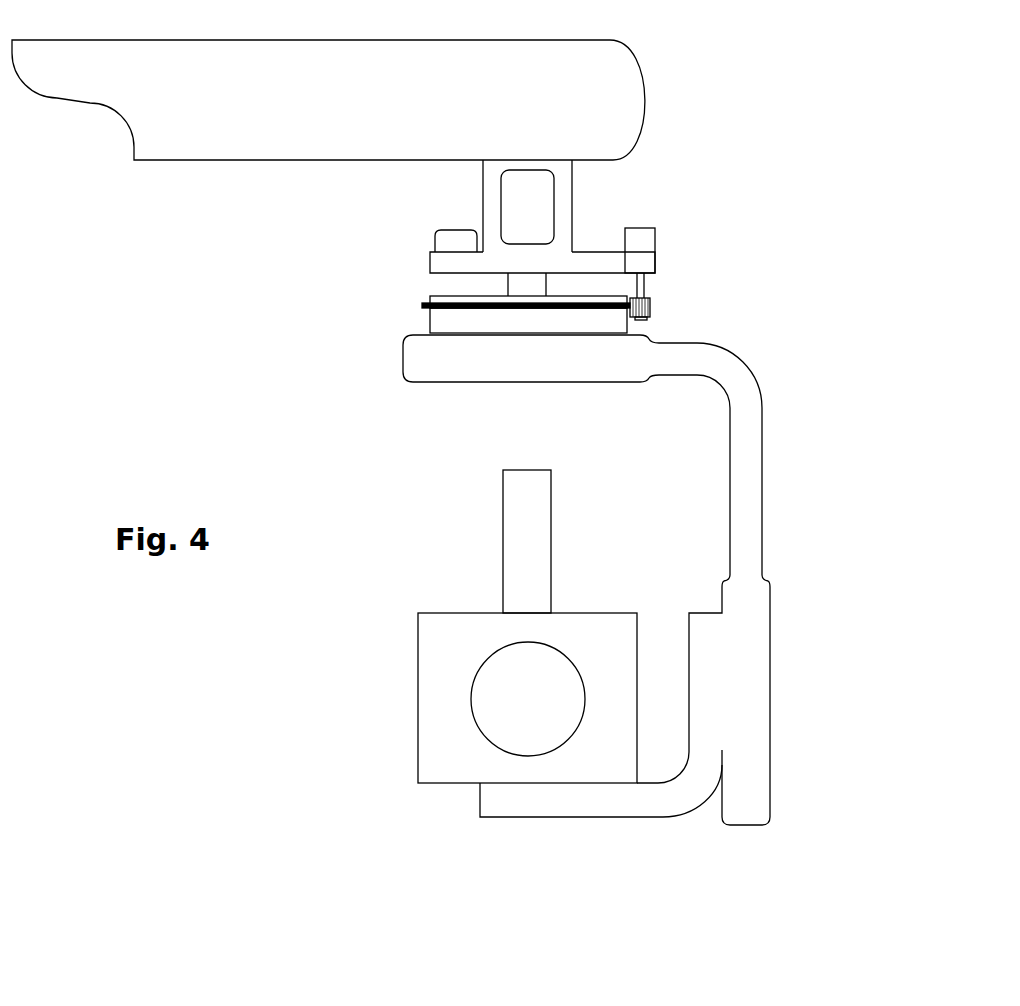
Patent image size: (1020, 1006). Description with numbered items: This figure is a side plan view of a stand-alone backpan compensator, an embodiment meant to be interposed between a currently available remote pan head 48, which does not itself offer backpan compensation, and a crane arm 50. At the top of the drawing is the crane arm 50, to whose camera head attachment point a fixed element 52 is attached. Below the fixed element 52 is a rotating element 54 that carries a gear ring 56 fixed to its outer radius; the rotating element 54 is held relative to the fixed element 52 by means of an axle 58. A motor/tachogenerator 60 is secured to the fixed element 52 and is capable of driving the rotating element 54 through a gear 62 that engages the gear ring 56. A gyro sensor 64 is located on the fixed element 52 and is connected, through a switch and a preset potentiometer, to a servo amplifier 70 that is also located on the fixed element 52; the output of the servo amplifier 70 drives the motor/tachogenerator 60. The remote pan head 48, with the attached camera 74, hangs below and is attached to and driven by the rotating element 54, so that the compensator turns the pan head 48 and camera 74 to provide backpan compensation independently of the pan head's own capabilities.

The remote pan head 48 is at (747, 688).
The crane arm 50 is at (300, 97).
The fixed element 52 is at (442, 262).
The rotating element 54 is at (445, 322).
The gear ring 56 is at (423, 305).
The axle 58 is at (515, 285).
The motor/tachogenerator 60 is at (642, 243).
The gear 62 is at (650, 308).
The gyro sensor 64 is at (452, 237).
The servo amplifier 70 is at (540, 202).
The camera 74 is at (433, 642).